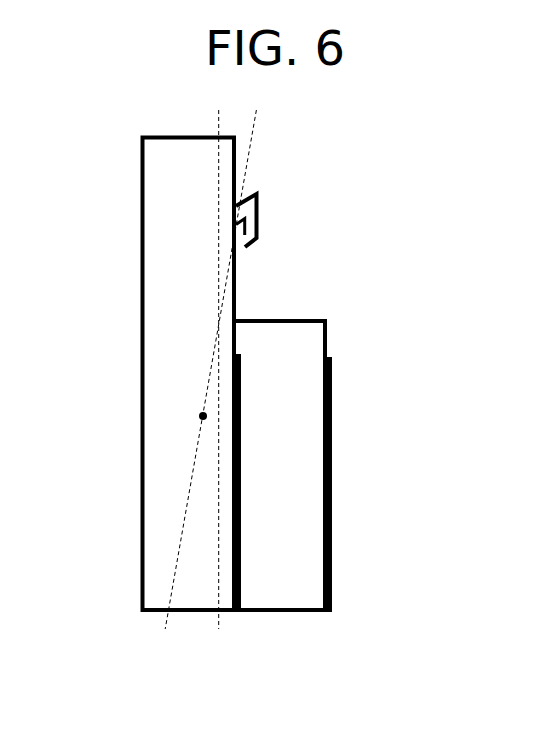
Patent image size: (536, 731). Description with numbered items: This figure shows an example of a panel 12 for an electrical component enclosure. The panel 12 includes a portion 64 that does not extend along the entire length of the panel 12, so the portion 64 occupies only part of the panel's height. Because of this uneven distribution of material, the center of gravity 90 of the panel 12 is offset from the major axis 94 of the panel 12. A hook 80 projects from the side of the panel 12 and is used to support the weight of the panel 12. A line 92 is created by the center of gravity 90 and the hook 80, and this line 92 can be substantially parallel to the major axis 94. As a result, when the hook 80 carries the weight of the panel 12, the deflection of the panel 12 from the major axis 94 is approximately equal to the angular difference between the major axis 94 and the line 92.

The panel 12 is at (140, 232).
The portion 64 is at (333, 413).
The hook 80 is at (258, 212).
The center of gravity 90 is at (203, 416).
The line 92 is at (253, 132).
The major axis 94 is at (219, 127).